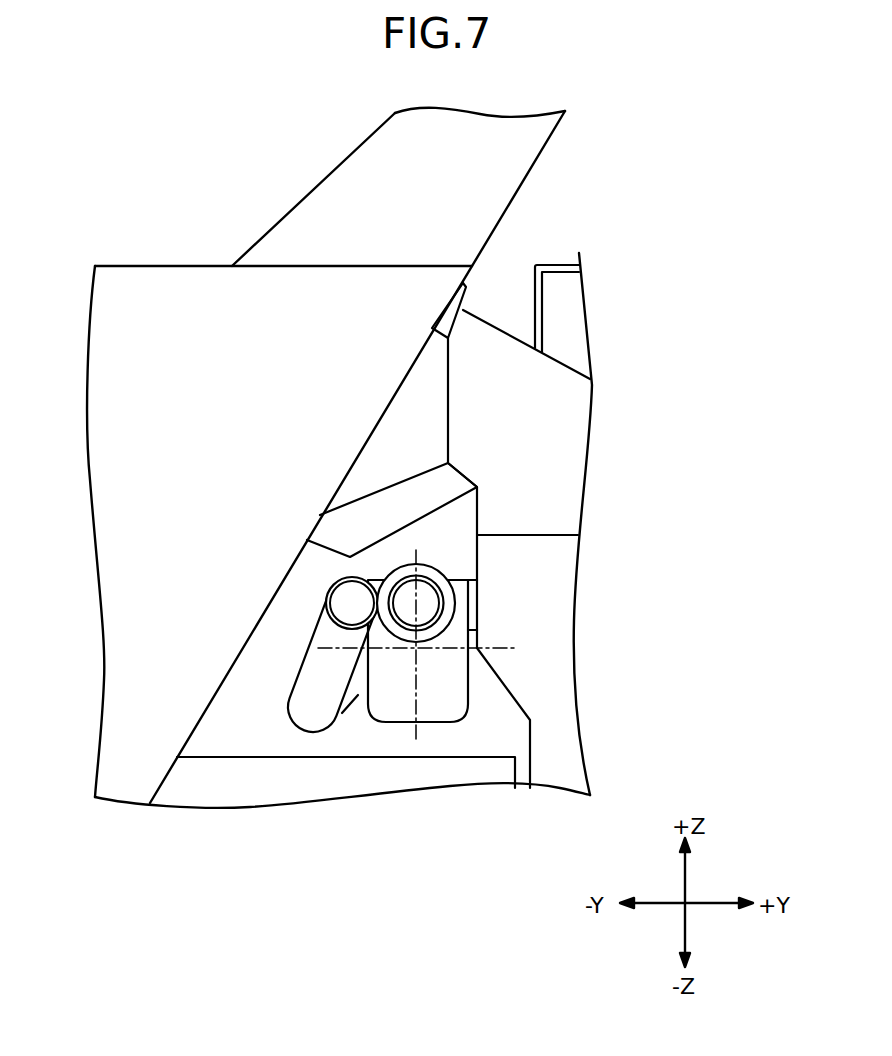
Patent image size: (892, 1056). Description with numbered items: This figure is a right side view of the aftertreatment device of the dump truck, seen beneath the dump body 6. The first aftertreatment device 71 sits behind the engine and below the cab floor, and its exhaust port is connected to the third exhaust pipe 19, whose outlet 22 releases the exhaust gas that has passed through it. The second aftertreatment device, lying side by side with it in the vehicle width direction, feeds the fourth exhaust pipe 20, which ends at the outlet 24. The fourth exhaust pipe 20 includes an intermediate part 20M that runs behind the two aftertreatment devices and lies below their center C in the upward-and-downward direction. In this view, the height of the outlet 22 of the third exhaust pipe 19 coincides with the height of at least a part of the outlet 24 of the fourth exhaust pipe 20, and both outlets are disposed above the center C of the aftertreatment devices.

The dump body 6 is at (176, 263).
The third exhaust pipe 19 is at (443, 603).
The fourth exhaust pipe 20 is at (298, 673).
The intermediate part 20M is at (358, 695).
The outlet 22 is at (410, 588).
The outlet 24 is at (351, 590).
The first aftertreatment device 71 is at (432, 708).
The center C is at (416, 603).